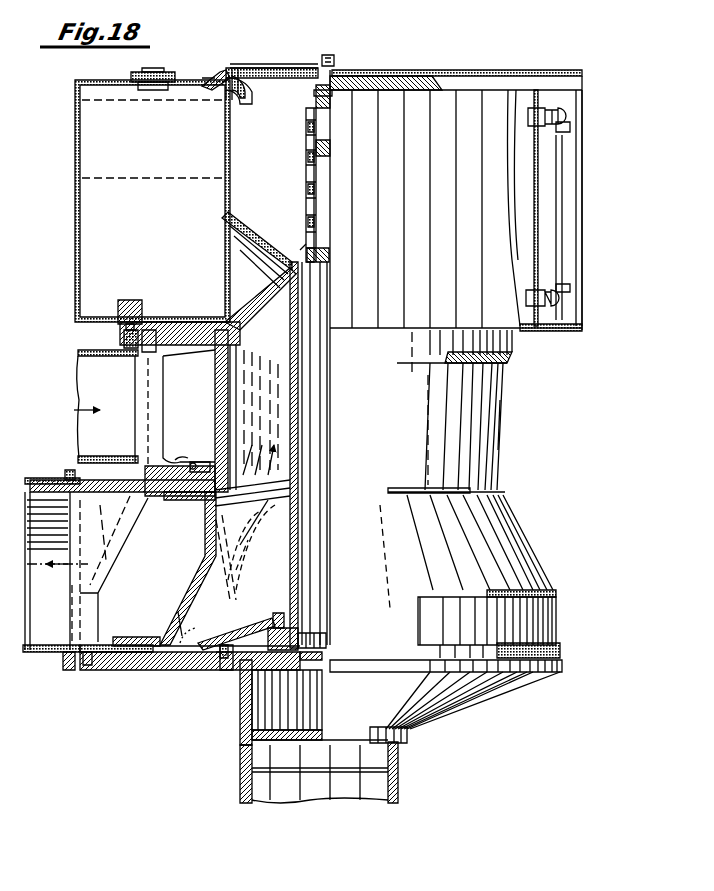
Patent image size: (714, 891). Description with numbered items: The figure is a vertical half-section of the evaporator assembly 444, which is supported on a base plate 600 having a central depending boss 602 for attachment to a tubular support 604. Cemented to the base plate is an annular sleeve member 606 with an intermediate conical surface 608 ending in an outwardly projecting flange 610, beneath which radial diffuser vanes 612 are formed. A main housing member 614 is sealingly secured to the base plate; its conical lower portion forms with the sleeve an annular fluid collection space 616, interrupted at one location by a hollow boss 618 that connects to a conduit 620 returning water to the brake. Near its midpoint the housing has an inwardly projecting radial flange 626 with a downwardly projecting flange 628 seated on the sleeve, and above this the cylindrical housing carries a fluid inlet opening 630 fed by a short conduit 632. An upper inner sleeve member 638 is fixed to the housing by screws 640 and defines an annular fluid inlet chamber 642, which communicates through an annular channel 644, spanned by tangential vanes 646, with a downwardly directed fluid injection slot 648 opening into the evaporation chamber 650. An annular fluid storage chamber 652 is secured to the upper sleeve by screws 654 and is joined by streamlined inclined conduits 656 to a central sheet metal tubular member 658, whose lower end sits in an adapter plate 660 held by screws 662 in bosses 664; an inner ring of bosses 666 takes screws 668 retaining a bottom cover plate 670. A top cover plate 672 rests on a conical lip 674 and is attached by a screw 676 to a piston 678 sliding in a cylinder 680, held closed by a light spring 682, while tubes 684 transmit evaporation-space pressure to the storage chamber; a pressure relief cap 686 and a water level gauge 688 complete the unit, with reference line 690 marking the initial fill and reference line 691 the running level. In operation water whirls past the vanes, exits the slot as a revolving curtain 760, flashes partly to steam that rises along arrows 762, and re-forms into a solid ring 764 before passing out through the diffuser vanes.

The evaporator assembly 444 is at (503, 428).
The base plate 600 is at (192, 672).
The central depending boss 602 is at (242, 718).
The tubular support 604 is at (240, 766).
The annular sleeve member 606 is at (206, 540).
The intermediate conical surface 608 is at (176, 600).
The outwardly projecting flange 610 is at (128, 637).
The radial diffuser vanes 612 is at (128, 660).
The main housing member 614 is at (498, 458).
The annular fluid collection space 616 is at (160, 568).
The hollow boss 618 is at (92, 482).
The conduit 620 is at (44, 486).
The inwardly projecting radial flange 626 is at (182, 503).
The downwardly projecting flange 628 is at (170, 486).
The fluid inlet opening 630 is at (130, 470).
The short conduit 632 is at (100, 360).
The upper inner sleeve member 638 is at (226, 410).
The screws 640 is at (145, 320).
The annular fluid inlet chamber 642 is at (203, 399).
The annular channel 644 is at (186, 458).
The tangential vanes 646 is at (200, 458).
The fluid injection slot 648 is at (222, 478).
The evaporation chamber 650 is at (268, 570).
The annular fluid storage chamber 652 is at (78, 150).
The screws 654 is at (120, 340).
The inclined conduits 656 is at (262, 234).
The central sheet metal tubular member 658 is at (297, 428).
The adapter plate 660 is at (258, 624).
The screws 662 is at (236, 670).
The circumferentially spaced bosses 664 is at (226, 640).
The inner ring of bosses 666 is at (318, 644).
The screws 668 is at (262, 660).
The bottom cover plate 670 is at (280, 652).
The top cover plate 672 is at (272, 64).
The conical lip 674 is at (214, 72).
The screw 676 is at (336, 57).
The piston 678 is at (326, 158).
The cylinder 680 is at (306, 155).
The spring 682 is at (306, 193).
The tubes 684 is at (262, 66).
The pressure relief cap 686 is at (156, 72).
The water level gauge 688 is at (566, 188).
The reference line 690 is at (188, 176).
The reference line 691 is at (152, 102).
The revolving curtain 760 is at (240, 548).
The arrows 762 is at (246, 526).
The solid ring 764 is at (188, 644).